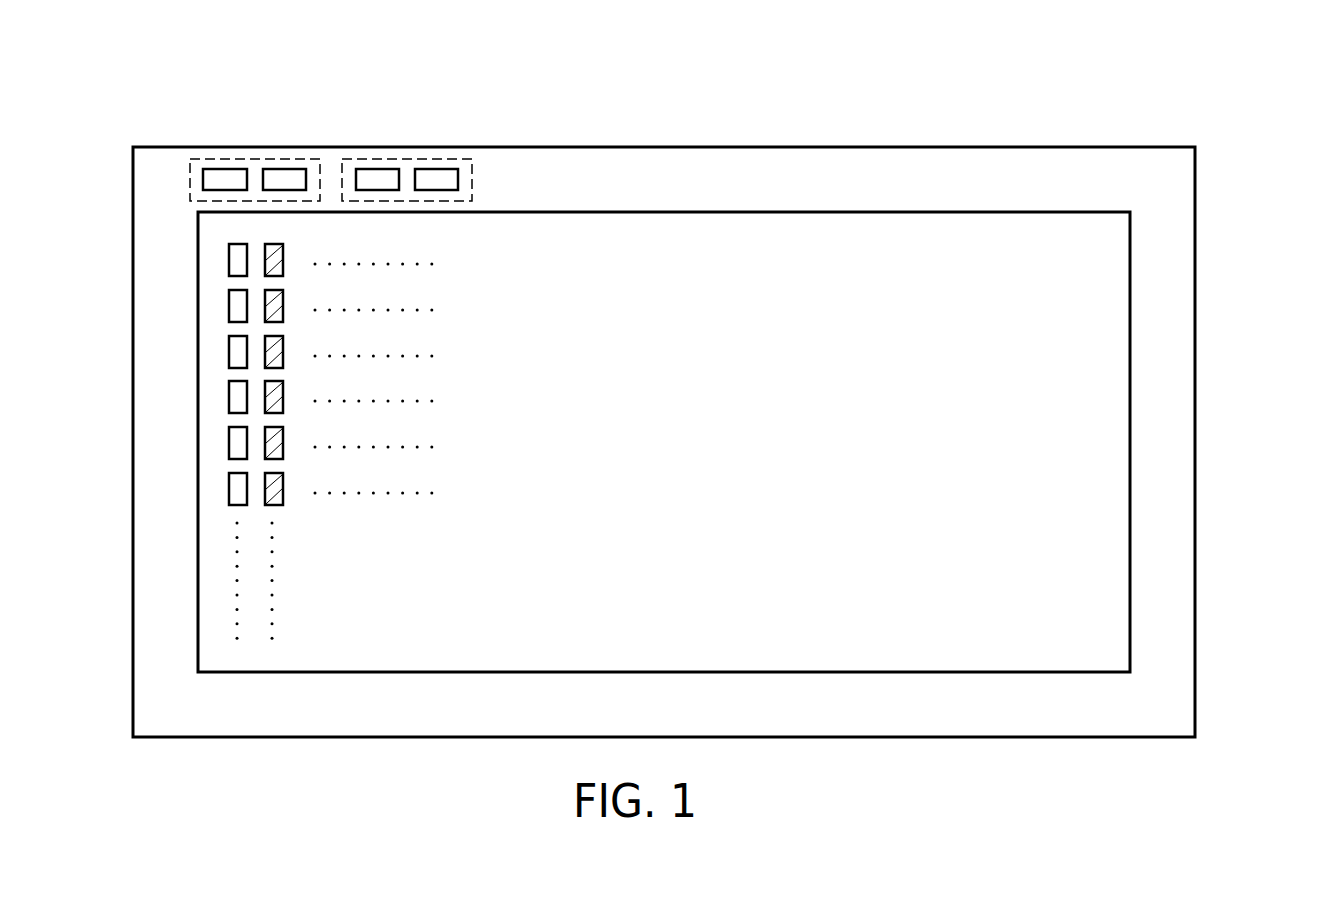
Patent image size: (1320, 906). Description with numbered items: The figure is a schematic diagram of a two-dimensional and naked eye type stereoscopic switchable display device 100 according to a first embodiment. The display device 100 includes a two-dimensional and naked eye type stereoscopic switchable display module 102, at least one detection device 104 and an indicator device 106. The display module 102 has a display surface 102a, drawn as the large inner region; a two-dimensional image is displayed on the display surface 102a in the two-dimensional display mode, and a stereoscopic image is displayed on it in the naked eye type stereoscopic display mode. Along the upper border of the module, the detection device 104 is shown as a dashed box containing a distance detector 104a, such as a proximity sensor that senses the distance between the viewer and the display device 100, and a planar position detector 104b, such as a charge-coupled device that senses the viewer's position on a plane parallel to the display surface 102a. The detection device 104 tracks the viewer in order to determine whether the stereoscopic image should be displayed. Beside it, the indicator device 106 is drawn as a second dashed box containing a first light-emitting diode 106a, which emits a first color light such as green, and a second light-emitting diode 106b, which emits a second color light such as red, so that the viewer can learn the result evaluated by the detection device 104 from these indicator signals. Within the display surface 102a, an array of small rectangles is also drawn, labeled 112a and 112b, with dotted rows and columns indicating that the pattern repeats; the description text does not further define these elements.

The two-dimensional and naked eye type stereoscopic switchable display device 100 is at (1140, 76).
The two-dimensional and naked eye type stereoscopic switchable display module 102 is at (1133, 587).
The display surface 102a is at (868, 581).
The detection device 104 is at (200, 162).
The distance detector 104a is at (225, 168).
The planar position detector 104b is at (292, 168).
The indicator device 106 is at (460, 159).
The first light-emitting diode 106a is at (383, 168).
The second light-emitting diode 106b is at (445, 168).
The first sub-pixel 112a is at (229, 262).
The second sub-pixel 112b is at (268, 505).